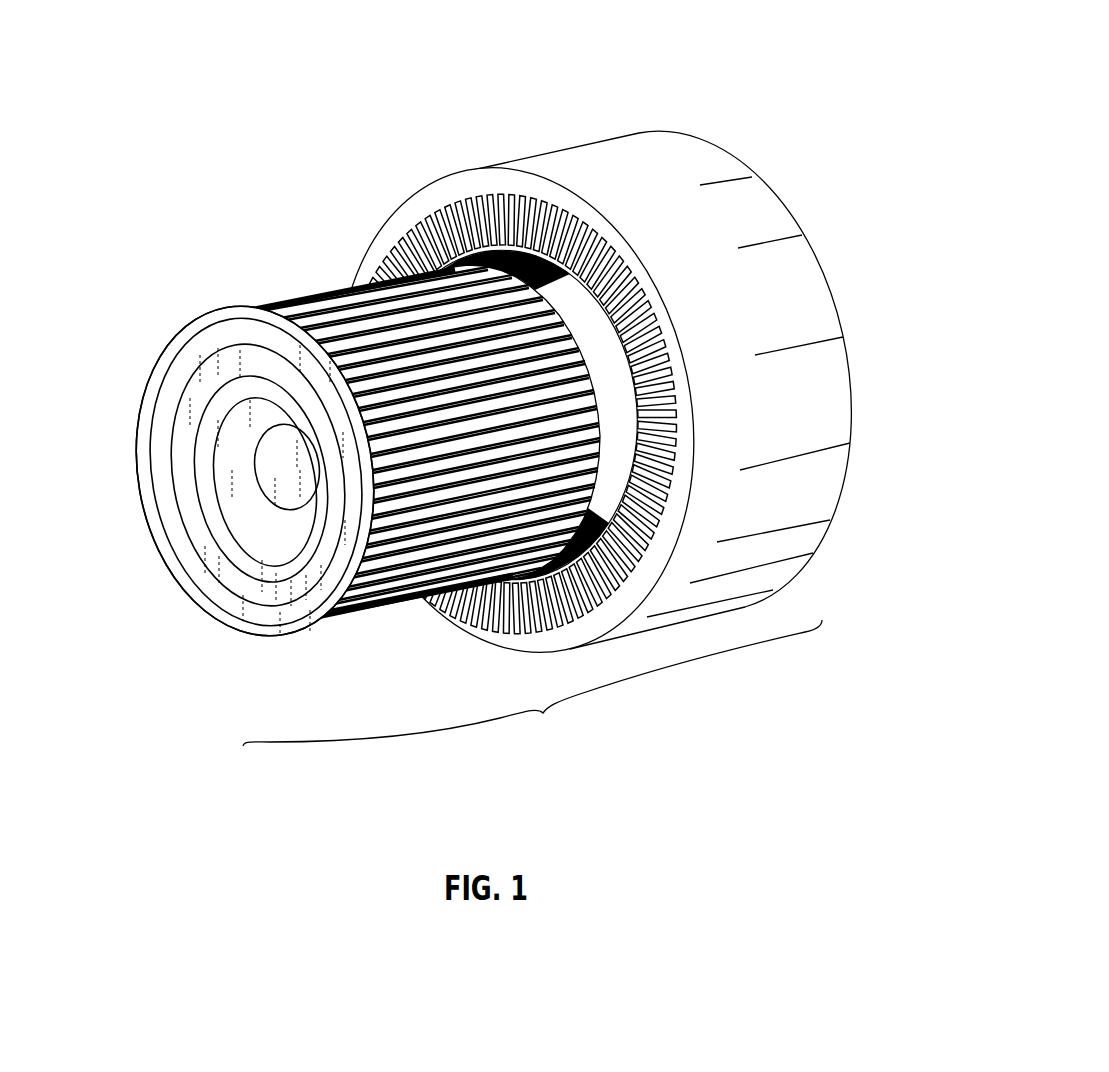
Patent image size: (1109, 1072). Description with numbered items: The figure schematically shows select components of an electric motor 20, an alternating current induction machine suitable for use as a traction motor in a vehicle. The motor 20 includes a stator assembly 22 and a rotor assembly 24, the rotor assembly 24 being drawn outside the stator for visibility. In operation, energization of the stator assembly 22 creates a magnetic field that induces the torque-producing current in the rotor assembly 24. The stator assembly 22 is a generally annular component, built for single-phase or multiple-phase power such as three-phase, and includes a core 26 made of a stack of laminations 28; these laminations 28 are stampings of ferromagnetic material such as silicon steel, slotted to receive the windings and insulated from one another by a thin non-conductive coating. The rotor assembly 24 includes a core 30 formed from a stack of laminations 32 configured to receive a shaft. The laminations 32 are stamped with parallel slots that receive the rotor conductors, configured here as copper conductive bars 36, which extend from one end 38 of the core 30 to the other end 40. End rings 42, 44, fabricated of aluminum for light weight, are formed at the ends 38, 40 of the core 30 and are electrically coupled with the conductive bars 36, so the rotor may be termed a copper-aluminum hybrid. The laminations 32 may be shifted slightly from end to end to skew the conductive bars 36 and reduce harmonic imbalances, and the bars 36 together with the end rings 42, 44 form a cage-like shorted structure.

The electric motor 20 is at (532, 687).
The stator assembly 22 is at (667, 72).
The rotor assembly 24 is at (258, 247).
The core 26 is at (825, 396).
The laminations 28 is at (779, 240).
The core 30 is at (328, 288).
The laminations 32 is at (377, 272).
The conductive bars 36 is at (437, 500).
The end 38 is at (258, 306).
The end 40 is at (455, 256).
The end ring 42 is at (147, 423).
The end ring 44 is at (582, 366).